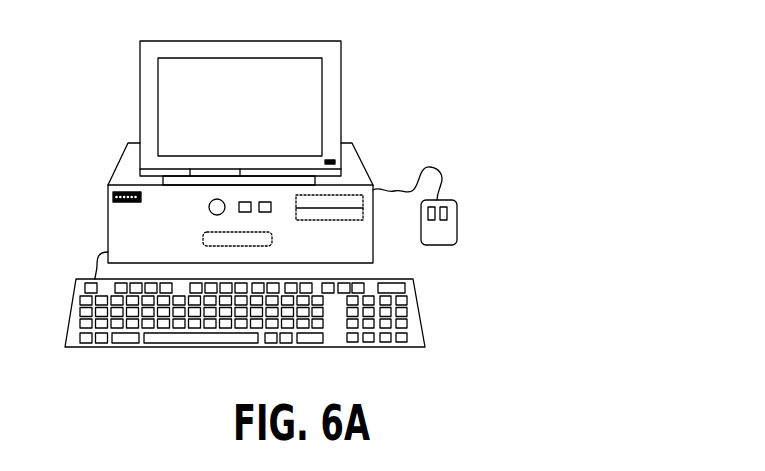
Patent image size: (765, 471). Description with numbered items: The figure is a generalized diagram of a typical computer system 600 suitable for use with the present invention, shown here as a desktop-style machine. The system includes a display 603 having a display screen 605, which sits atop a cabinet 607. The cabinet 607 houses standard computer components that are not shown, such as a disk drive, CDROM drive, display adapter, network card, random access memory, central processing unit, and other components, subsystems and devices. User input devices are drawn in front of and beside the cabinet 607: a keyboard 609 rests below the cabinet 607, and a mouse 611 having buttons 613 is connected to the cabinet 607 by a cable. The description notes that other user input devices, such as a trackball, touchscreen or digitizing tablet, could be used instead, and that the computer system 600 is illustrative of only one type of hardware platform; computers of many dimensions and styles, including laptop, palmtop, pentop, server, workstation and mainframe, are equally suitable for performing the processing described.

The computer system 600 is at (537, 88).
The display 603 is at (339, 102).
The display screen 605 is at (315, 72).
The cabinet 607 is at (350, 162).
The keyboard 609 is at (138, 347).
The mouse 611 is at (447, 237).
The buttons 613 is at (447, 207).